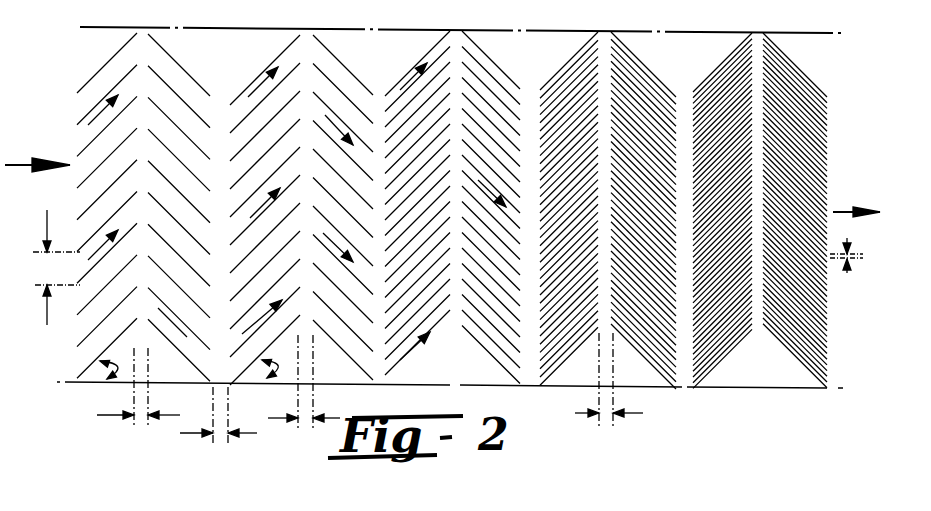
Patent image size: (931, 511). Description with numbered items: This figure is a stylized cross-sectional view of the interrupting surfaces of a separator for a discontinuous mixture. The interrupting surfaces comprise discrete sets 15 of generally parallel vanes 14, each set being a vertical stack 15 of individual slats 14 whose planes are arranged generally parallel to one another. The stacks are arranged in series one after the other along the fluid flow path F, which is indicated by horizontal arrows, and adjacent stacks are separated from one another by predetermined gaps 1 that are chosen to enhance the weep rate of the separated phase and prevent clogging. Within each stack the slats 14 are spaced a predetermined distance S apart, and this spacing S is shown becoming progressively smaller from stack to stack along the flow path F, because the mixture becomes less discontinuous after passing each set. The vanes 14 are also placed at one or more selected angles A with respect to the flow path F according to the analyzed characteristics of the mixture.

The vanes 14 is at (104, 66).
The discrete set of vanes 15 is at (278, 43).
The gap between discrete sets 1 is at (142, 418).
The angle of vanes A is at (122, 370).
The fluid flow path F is at (8, 165).
The spacing between vanes S is at (868, 282).